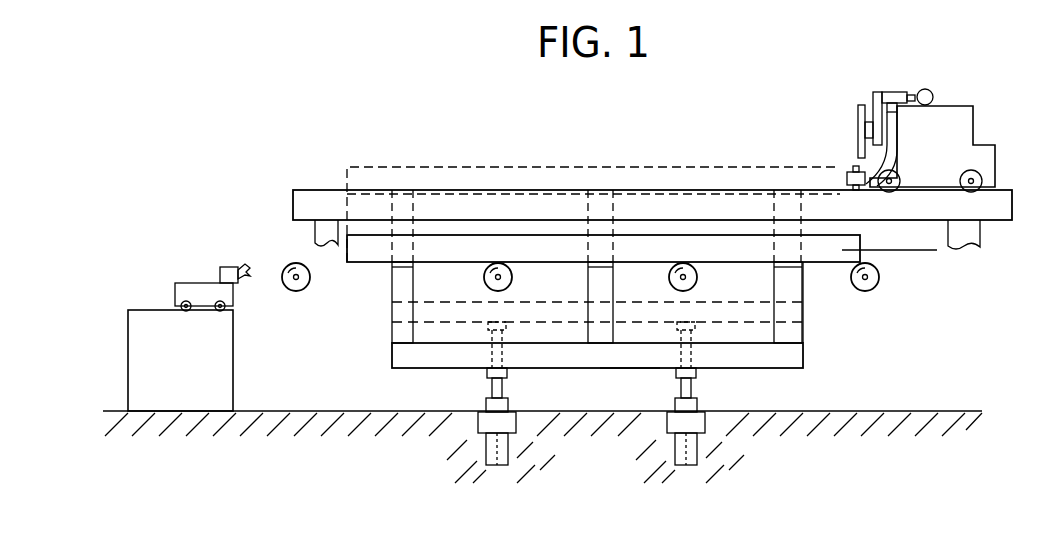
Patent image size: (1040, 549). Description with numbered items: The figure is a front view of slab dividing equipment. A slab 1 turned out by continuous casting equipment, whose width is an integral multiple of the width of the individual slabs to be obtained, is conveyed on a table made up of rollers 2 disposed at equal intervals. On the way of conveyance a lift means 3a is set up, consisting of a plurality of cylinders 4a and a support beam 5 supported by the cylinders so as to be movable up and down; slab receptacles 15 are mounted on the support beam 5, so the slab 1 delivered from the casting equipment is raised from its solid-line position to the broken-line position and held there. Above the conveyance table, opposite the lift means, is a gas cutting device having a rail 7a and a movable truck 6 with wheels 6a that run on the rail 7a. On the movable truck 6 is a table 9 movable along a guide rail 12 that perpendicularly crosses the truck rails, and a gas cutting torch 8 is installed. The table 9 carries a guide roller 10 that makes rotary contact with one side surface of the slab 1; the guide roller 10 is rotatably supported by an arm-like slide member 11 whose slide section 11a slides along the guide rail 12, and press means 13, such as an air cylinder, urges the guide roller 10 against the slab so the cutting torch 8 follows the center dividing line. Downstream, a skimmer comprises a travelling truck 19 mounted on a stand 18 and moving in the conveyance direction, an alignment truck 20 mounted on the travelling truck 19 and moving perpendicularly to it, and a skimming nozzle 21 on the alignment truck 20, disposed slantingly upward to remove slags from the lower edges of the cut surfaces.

The slab 1 is at (368, 240).
The rollers 2 is at (287, 268).
The lift means 3a is at (624, 372).
The cylinders 4a is at (495, 386).
The support beam 5 is at (403, 362).
The movable truck 6 is at (945, 118).
The wheels 6a is at (978, 176).
The rail 7a is at (582, 190).
The gas cutting torch 8 is at (858, 135).
The table 9 is at (878, 92).
The guide roller 10 is at (847, 178).
The arm-like slide member 11 is at (877, 167).
The slide section 11a is at (900, 103).
The guide rail 12 is at (897, 92).
The press means 13 is at (932, 93).
The slab receptacles 15 is at (400, 290).
The stand 18 is at (137, 322).
The travelling truck 19 is at (178, 283).
The alignment truck 20 is at (221, 268).
The skimming nozzle 21 is at (242, 268).